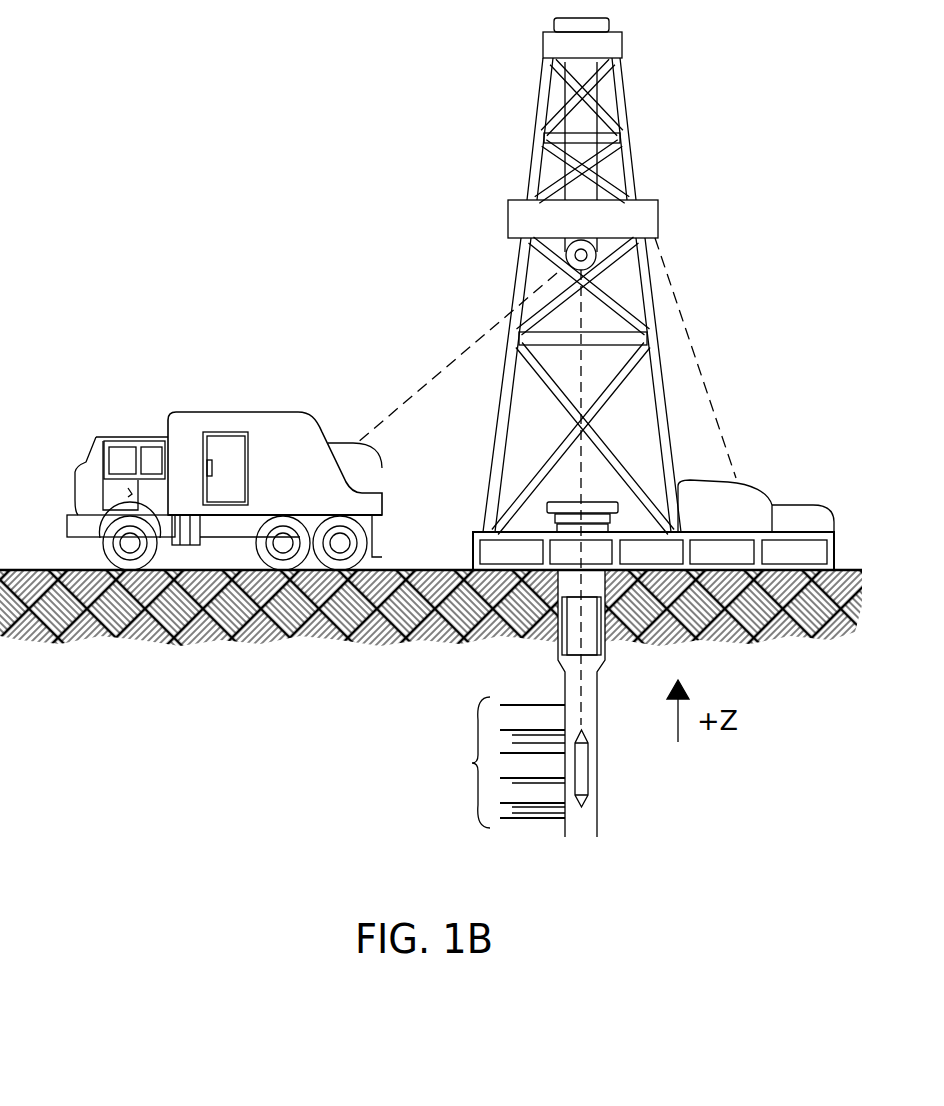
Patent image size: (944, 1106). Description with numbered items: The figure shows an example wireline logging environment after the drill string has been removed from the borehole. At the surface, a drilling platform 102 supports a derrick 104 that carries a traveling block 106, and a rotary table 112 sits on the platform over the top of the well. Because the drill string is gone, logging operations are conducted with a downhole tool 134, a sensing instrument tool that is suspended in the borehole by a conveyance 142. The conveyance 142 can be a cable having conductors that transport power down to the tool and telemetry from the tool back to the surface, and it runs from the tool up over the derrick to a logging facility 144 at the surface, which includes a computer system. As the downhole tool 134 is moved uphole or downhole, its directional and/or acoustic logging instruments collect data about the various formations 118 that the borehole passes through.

The drilling platform 102 is at (473, 556).
The derrick 104 is at (486, 516).
The traveling block 106 is at (597, 257).
The rotary table 112 is at (568, 502).
The formations 118 is at (470, 763).
The downhole tool 134 is at (589, 770).
The conveyance 142 is at (455, 357).
The logging facility 144 is at (240, 412).